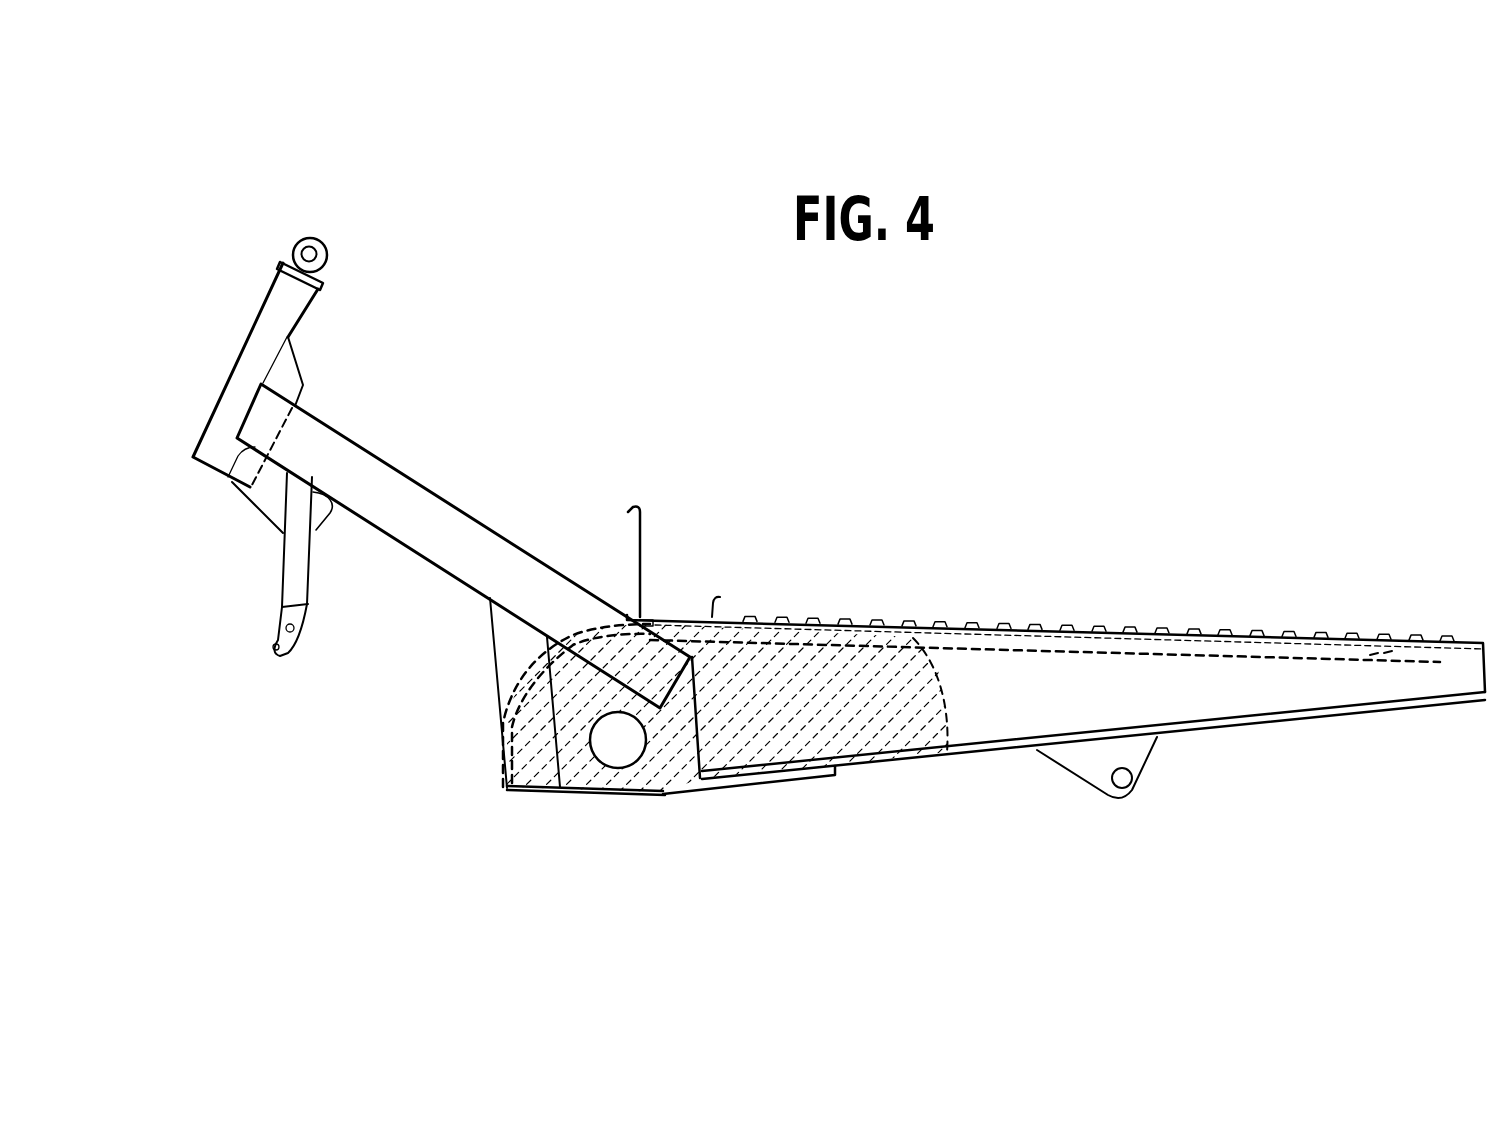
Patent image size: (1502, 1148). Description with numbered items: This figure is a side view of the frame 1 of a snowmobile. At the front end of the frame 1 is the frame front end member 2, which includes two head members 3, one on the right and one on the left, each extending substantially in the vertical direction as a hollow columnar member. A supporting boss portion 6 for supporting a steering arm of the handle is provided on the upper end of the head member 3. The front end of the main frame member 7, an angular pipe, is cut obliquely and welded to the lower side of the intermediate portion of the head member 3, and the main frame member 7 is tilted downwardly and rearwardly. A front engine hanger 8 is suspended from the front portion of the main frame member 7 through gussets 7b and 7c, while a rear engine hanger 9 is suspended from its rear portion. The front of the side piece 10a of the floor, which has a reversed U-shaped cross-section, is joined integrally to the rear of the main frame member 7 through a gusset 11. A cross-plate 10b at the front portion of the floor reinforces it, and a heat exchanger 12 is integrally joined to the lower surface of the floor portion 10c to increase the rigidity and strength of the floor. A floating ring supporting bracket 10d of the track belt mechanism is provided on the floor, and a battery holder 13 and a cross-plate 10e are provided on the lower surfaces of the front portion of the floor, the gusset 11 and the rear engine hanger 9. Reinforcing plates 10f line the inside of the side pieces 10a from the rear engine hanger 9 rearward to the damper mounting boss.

The frame 1 is at (817, 530).
The frame front end member 2 is at (306, 319).
The head member 3 is at (235, 372).
The supporting boss portion 6 is at (317, 238).
The main frame member 7 is at (420, 512).
The gusset 7b is at (267, 493).
The gusset 7c is at (327, 512).
The front engine hanger 8 is at (298, 570).
The rear engine hanger 9 is at (500, 658).
The side piece 10a is at (990, 707).
The cross-plate 10b is at (588, 625).
The floor portion 10c is at (1300, 633).
The floating ring supporting bracket 10d is at (1095, 768).
The cross-plate 10e is at (673, 800).
The reinforcing plate 10f is at (840, 707).
The gusset 11 is at (707, 728).
The heat exchanger 12 is at (1338, 664).
The battery holder 13 is at (642, 510).